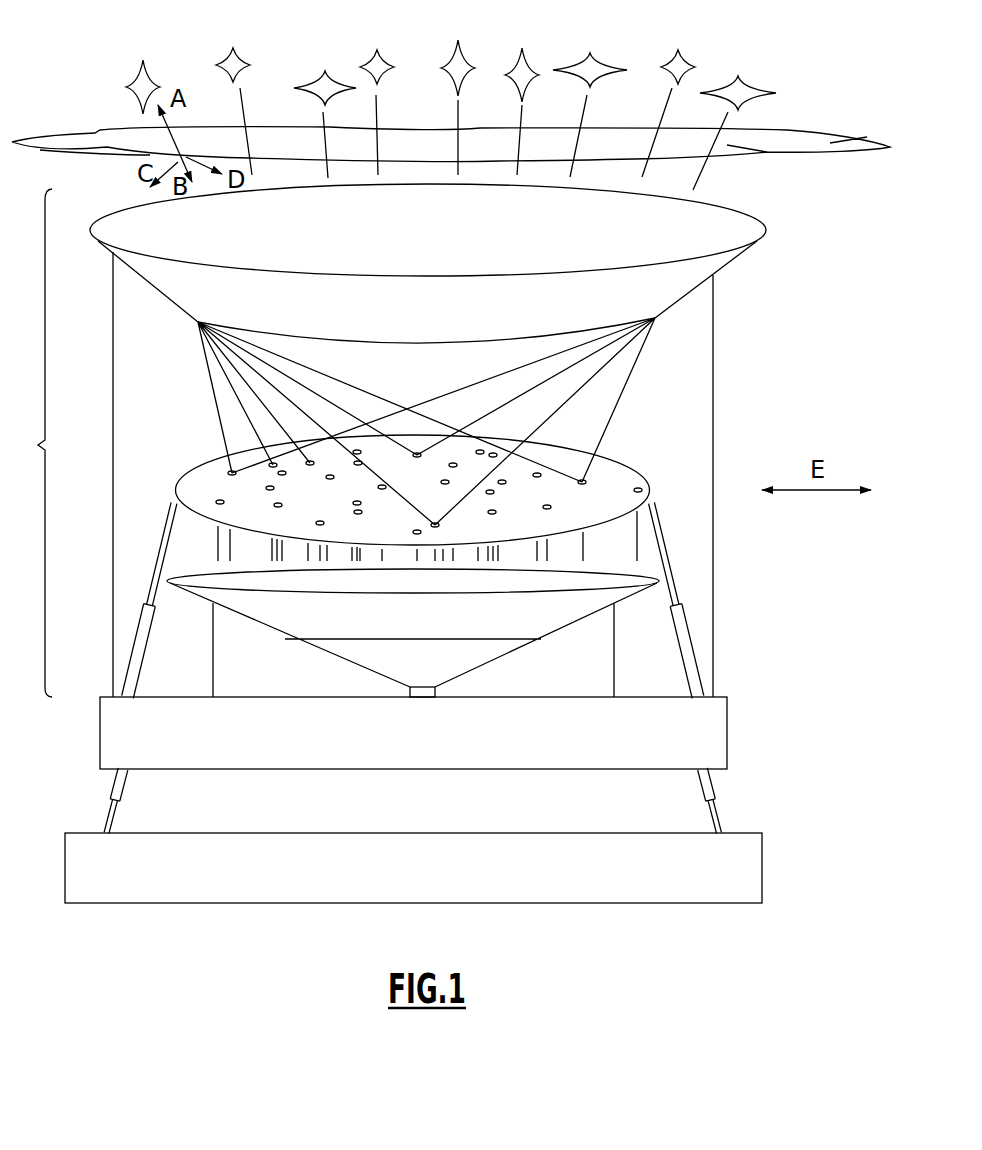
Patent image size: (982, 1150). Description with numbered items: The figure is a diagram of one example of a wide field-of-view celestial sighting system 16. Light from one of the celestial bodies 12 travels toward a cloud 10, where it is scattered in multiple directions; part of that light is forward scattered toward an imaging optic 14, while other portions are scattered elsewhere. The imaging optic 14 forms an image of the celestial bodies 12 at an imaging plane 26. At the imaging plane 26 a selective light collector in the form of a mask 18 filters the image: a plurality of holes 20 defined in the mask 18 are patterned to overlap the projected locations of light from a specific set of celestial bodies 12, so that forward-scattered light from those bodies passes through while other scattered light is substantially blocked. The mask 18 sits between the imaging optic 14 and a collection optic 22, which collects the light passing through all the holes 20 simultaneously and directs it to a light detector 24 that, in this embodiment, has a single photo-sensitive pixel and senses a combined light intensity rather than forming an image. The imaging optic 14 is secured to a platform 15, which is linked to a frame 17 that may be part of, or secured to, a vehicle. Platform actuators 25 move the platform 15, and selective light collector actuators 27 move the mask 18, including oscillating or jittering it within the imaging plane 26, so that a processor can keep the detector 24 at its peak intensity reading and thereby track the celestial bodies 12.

The cloud 10 is at (62, 134).
The celestial body 12 is at (140, 60).
The imaging optic 14 is at (174, 299).
The platform 15 is at (727, 735).
The wide field-of-view celestial sighting system 16 is at (30, 443).
The frame 17 is at (762, 875).
The mask 18 is at (177, 493).
The holes 20 is at (309, 461).
The collection optic 22 is at (211, 603).
The light detector 24 is at (410, 697).
The platform actuator 25 is at (110, 793).
The imaging plane 26 is at (623, 503).
The selective light collector actuator 27 is at (147, 645).